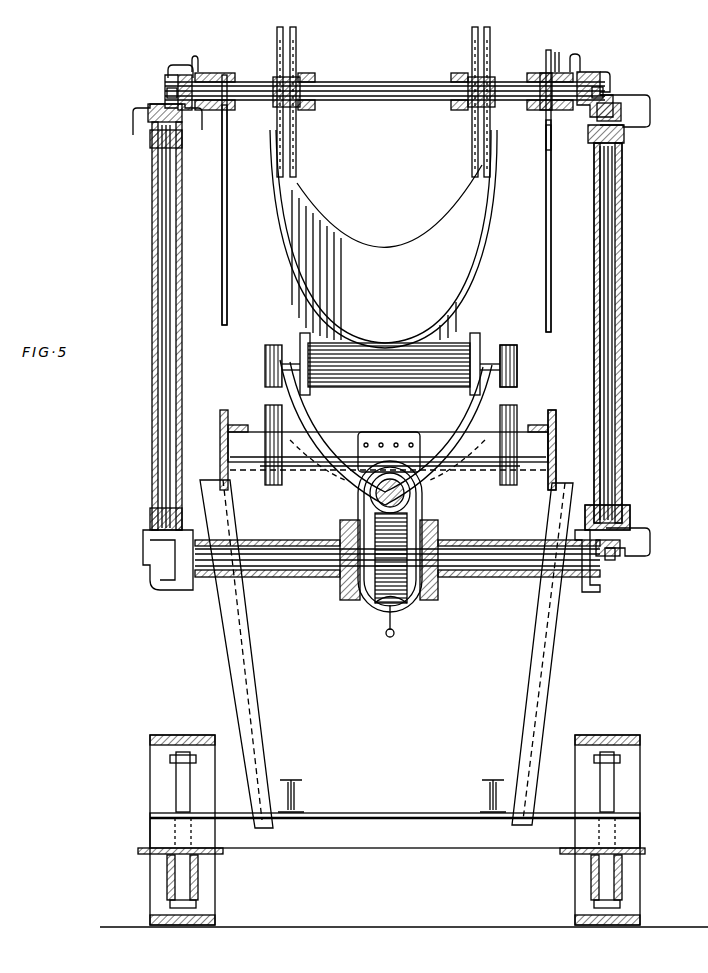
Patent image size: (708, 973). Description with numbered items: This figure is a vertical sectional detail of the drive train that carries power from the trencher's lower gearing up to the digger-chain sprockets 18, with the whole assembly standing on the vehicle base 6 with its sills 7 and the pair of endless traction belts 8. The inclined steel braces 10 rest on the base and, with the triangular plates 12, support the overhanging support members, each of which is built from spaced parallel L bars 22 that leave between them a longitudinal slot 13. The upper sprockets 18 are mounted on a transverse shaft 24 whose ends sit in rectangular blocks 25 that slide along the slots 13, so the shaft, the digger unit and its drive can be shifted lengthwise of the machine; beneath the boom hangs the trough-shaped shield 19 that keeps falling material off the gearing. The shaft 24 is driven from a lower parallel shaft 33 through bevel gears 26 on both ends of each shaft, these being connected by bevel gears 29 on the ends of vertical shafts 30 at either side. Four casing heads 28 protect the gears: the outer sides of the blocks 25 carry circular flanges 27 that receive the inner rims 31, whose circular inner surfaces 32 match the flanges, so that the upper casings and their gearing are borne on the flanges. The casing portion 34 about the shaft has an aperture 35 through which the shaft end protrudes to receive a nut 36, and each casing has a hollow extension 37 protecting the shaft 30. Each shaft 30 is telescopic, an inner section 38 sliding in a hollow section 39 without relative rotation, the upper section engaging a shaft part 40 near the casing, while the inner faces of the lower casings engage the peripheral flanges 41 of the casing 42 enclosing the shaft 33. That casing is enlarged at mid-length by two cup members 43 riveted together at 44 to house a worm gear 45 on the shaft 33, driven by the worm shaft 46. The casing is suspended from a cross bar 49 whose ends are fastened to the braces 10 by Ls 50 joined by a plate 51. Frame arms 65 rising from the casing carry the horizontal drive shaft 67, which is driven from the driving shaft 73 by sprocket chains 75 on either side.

The base 6 is at (146, 854).
The sills 7 is at (296, 798).
The endless traction belts 8 is at (148, 740).
The steel braces 10 is at (244, 702).
The triangular plates 12 is at (228, 255).
The slots 13 is at (545, 70).
The sprockets 18 is at (298, 37).
The shield or guide 19 is at (350, 246).
The L bars 22 is at (220, 120).
The transverse shaft 24 is at (400, 97).
The blocks 25 is at (238, 110).
The bevel gears 26 is at (610, 80).
The flanges 27 is at (588, 70).
The casing heads 28 is at (622, 102).
The bevel gears 29 is at (648, 110).
The shafts 30 is at (622, 285).
The rims 31 is at (198, 60).
The inner surfaces 32 is at (184, 66).
The lower transverse shaft 33 is at (300, 575).
The portion of casing 34 is at (172, 74).
The aperture 35 is at (604, 90).
The nut 36 is at (166, 93).
The hollow extension 37 is at (630, 138).
The inner section 38 is at (610, 182).
The hollow section 39 is at (622, 215).
The shaft part 40 is at (625, 522).
The peripheral flanges 41 is at (580, 600).
The casing 42 is at (502, 578).
The cup members 43 is at (422, 513).
The rivet connection 44 is at (389, 636).
The worm gear 45 is at (380, 604).
The worm shaft 46 is at (372, 500).
The cross bar or plate 49 is at (522, 440).
The Ls 50 is at (230, 422).
The plate 51 is at (556, 432).
The frame arms 65 is at (300, 420).
The horizontal drive shaft 67 is at (277, 360).
The driving shaft 73 is at (304, 470).
The sprocket chains 75 is at (518, 380).